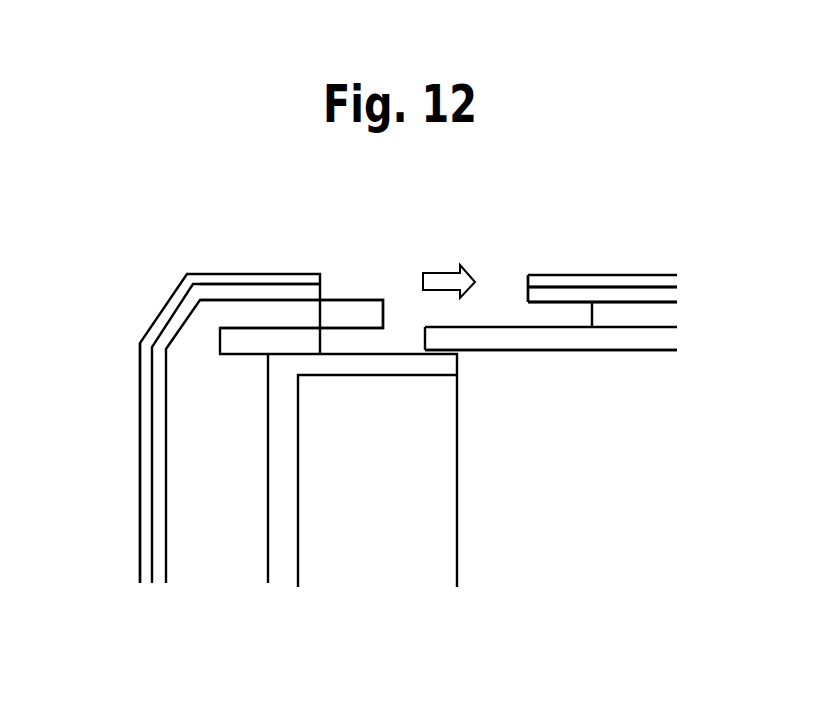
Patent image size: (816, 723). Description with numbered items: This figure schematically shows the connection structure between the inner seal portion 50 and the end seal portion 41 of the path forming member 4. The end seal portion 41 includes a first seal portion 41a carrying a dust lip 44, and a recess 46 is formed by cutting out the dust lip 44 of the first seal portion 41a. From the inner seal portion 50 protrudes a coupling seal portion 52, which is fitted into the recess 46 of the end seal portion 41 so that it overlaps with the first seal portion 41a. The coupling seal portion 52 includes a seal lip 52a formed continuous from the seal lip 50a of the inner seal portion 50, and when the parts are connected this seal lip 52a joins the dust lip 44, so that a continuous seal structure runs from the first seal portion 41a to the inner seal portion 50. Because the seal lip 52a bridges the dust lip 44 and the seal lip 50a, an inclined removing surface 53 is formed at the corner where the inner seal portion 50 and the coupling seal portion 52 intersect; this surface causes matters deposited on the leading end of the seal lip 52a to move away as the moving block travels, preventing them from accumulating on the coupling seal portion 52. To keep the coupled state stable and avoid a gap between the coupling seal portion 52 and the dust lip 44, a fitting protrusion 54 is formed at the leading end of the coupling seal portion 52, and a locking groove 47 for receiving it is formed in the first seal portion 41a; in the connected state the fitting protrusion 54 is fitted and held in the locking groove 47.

The path forming member 4 is at (620, 355).
The end seal portion 41 is at (602, 294).
The first seal portion 41a is at (644, 312).
The dust lip 44 is at (580, 283).
The recess 46 is at (472, 325).
The locking groove 47 is at (547, 303).
The inner seal portion 50 is at (178, 472).
The seal lip 50a is at (140, 393).
The coupling seal portion 52 is at (257, 308).
The seal lip 52a is at (300, 272).
The inclined removing surface 53 is at (160, 308).
The fitting protrusion 54 is at (365, 307).